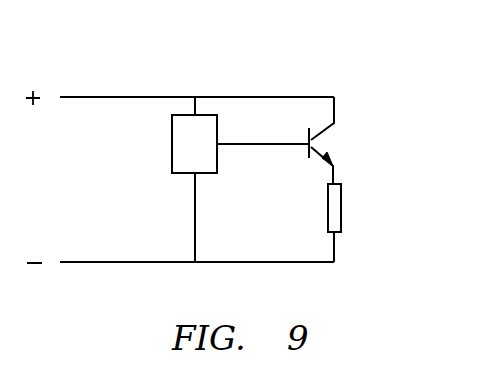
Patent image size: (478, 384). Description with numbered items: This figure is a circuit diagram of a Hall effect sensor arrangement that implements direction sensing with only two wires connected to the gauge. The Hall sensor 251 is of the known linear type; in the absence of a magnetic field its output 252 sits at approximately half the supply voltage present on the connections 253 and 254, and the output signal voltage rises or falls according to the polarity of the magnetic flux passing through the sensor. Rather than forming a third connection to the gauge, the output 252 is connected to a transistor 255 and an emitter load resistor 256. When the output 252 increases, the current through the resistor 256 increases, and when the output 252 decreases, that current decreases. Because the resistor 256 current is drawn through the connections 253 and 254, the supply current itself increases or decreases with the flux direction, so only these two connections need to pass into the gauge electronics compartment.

The Hall sensor 251 is at (172, 148).
The output 252 is at (240, 143).
The connection 253 is at (87, 97).
The connection 254 is at (95, 262).
The transistor 255 is at (340, 143).
The resistor 256 is at (341, 208).